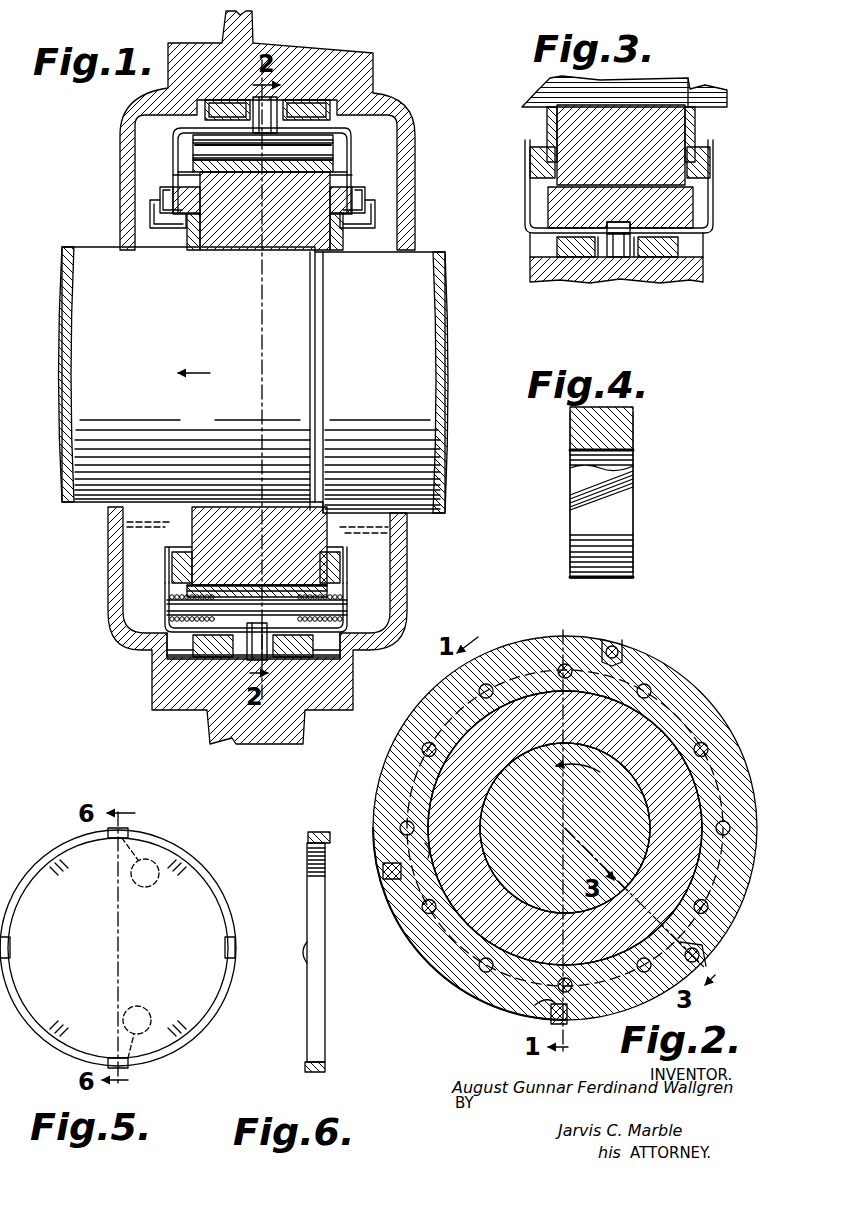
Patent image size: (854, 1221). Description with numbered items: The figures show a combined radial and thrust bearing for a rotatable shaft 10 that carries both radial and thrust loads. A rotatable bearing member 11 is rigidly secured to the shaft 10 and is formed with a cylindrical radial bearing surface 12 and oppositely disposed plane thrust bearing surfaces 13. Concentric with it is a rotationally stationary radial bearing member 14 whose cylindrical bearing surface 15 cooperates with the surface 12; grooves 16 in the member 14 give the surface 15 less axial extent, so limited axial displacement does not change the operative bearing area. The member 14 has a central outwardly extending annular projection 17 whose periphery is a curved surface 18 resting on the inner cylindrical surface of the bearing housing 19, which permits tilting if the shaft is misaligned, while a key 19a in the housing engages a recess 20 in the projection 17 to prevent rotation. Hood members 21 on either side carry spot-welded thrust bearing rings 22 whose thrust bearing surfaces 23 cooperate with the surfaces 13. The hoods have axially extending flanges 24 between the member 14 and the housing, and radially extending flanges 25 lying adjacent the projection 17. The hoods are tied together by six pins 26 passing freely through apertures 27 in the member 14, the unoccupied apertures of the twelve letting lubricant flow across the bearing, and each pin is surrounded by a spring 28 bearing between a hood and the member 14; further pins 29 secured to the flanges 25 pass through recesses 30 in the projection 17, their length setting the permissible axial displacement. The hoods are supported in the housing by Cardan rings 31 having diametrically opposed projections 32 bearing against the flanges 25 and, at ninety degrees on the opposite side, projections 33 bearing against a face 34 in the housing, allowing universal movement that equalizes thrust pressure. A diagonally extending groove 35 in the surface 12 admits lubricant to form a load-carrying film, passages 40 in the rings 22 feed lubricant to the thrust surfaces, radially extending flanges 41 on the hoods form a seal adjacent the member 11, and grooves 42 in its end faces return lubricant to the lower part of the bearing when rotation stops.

In FIG. 1, the rotatable shaft 10 is at (76, 394).
In FIG. 3, the rotatable shaft 10 is at (545, 82).
In FIG. 2, the rotatable shaft 10 is at (565, 828).
In FIG. 1, the rotatable bearing member 11 is at (247, 252).
In FIG. 3, the rotatable bearing member 11 is at (690, 126).
In FIG. 4, the rotatable bearing member 11 is at (575, 524).
In FIG. 2, the rotatable bearing member 11 is at (565, 828).
In FIG. 1, the cylindrical radial bearing surface 12 is at (240, 166).
In FIG. 4, the cylindrical radial bearing surface 12 is at (617, 407).
In FIG. 2, the cylindrical radial bearing surface 12 is at (512, 718).
In FIG. 1, the plane thrust bearing surfaces 13 is at (200, 200).
In FIG. 4, the plane thrust bearing surfaces 13 is at (570, 415).
In FIG. 1, the radial bearing member 14 is at (318, 160).
In FIG. 3, the radial bearing member 14 is at (552, 215).
In FIG. 2, the radial bearing member 14 is at (392, 790).
In FIG. 1, the cylindrical bearing surface 15 is at (285, 168).
In FIG. 2, the cylindrical bearing surface 15 is at (432, 770).
In FIG. 1, the grooves 16 is at (200, 172).
In FIG. 1, the annular projection 17 is at (255, 138).
In FIG. 1, the curved surface 18 is at (255, 98).
In FIG. 2, the curved surface 18 is at (432, 960).
In FIG. 1, the bearing housing 19 is at (290, 52).
In FIG. 3, the bearing housing 19 is at (703, 277).
In FIG. 1, the key 19a is at (250, 662).
In FIG. 2, the key 19a is at (567, 1020).
In FIG. 1, the recess 20 is at (240, 607).
In FIG. 2, the recess 20 is at (540, 1010).
In FIG. 1, the hood members 21 is at (168, 590).
In FIG. 3, the hood members 21 is at (526, 200).
In FIG. 1, the thrust bearing rings 22 is at (175, 205).
In FIG. 3, the thrust bearing rings 22 is at (532, 165).
In FIG. 1, the thrust bearing surfaces 23 is at (173, 190).
In FIG. 1, the axially extending flanges 24 is at (172, 640).
In FIG. 3, the axially extending flanges 24 is at (553, 237).
In FIG. 1, the radially extending flanges 25 is at (222, 100).
In FIG. 3, the radially extending flanges 25 is at (600, 256).
In FIG. 1, the pins 26 is at (228, 598).
In FIG. 2, the pins 26 is at (566, 663).
In FIG. 1, the apertures 27 is at (200, 146).
In FIG. 2, the apertures 27 is at (651, 689).
In FIG. 1, the springs 28 is at (170, 606).
In FIG. 3, the pins 29 is at (618, 258).
In FIG. 2, the pins 29 is at (620, 648).
In FIG. 3, the recesses 30 is at (622, 232).
In FIG. 2, the recesses 30 is at (610, 641).
In FIG. 1, the Cardan rings 31 is at (185, 700).
In FIG. 3, the Cardan rings 31 is at (575, 258).
In FIG. 5, the Cardan rings 31 is at (188, 860).
In FIG. 6, the Cardan rings 31 is at (310, 893).
In FIG. 1, the projections 32 is at (216, 657).
In FIG. 2, the projections 32 is at (360, 850).
In FIG. 5, the projections 32 is at (133, 948).
In FIG. 6, the projections 32 is at (330, 840).
In FIG. 5, the projections 33 is at (10, 946).
In FIG. 6, the projections 33 is at (303, 953).
In FIG. 1, the face 34 is at (180, 650).
In FIG. 4, the diagonally extending groove 35 is at (610, 500).
In FIG. 2, the diagonally extending groove 35 is at (430, 850).
In FIG. 1, the passages 40 is at (168, 575).
In FIG. 1, the radially extending flanges 41 is at (170, 528).
In FIG. 1, the grooves 42 is at (190, 222).
In FIG. 3, the grooves 42 is at (547, 137).